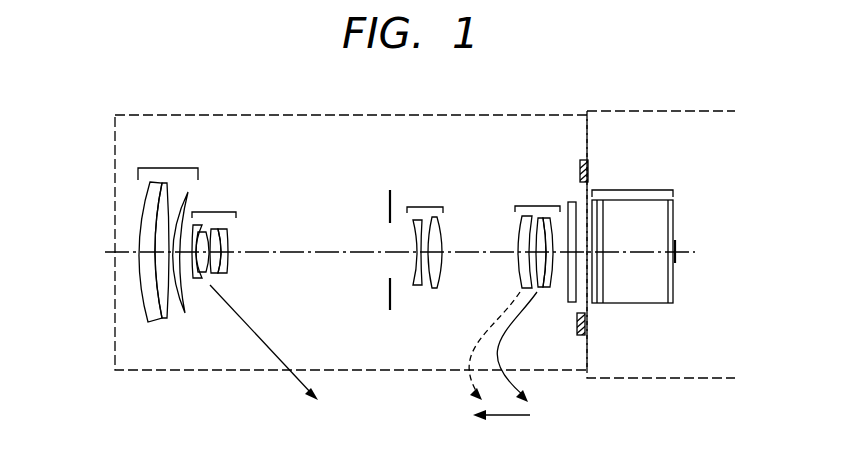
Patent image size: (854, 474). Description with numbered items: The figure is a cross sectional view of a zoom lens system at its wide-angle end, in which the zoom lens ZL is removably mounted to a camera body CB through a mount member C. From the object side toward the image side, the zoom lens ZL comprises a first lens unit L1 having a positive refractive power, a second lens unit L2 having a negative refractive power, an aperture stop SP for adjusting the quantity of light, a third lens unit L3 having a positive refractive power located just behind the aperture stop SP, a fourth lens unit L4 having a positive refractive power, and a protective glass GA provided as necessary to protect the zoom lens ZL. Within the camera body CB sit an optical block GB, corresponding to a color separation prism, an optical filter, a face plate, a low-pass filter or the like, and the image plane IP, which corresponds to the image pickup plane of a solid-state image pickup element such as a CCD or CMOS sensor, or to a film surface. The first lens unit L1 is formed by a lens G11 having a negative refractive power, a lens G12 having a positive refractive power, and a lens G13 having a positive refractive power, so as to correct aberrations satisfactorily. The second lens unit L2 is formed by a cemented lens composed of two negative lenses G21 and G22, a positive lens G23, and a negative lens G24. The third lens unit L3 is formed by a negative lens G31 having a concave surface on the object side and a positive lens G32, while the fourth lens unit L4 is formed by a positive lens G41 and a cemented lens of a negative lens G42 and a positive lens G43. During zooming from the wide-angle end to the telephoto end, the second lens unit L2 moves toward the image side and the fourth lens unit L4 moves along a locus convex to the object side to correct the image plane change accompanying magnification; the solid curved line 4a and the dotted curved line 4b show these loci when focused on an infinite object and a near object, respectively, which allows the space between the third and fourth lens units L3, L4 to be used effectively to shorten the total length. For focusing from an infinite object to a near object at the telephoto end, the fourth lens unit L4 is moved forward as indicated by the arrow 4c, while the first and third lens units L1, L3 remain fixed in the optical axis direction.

The zoom lens ZL is at (351, 229).
The camera body CB is at (661, 231).
The first lens unit L1 is at (152, 224).
The second lens unit L2 is at (219, 300).
The third lens unit L3 is at (385, 232).
The fourth lens unit L4 is at (509, 235).
The lens G11 is at (150, 202).
The lens G12 is at (158, 230).
The lens G13 is at (190, 191).
The lens G21 is at (192, 278).
The lens G22 is at (205, 280).
The lens G23 is at (218, 242).
The lens G24 is at (225, 267).
The lens G31 is at (415, 228).
The lens G32 is at (432, 243).
The lens G41 is at (522, 228).
The lens G42 is at (537, 242).
The lens G43 is at (547, 272).
The aperture stop SP is at (390, 190).
The protective glass GA is at (573, 200).
The optical block GB is at (632, 233).
The image plane IP is at (678, 248).
The mount member C is at (585, 328).
The solid curved line 4a is at (517, 347).
The dotted curved line 4b is at (474, 346).
The arrow 4c is at (501, 429).